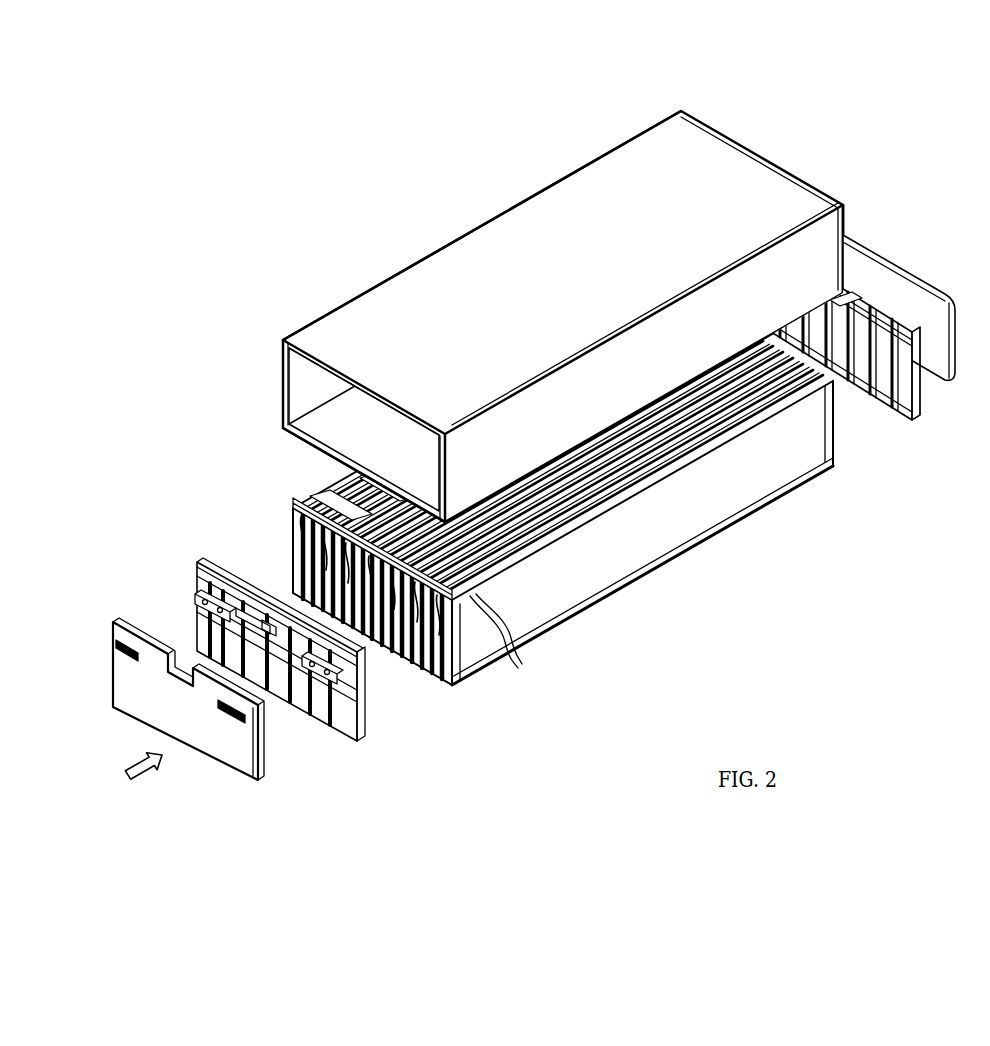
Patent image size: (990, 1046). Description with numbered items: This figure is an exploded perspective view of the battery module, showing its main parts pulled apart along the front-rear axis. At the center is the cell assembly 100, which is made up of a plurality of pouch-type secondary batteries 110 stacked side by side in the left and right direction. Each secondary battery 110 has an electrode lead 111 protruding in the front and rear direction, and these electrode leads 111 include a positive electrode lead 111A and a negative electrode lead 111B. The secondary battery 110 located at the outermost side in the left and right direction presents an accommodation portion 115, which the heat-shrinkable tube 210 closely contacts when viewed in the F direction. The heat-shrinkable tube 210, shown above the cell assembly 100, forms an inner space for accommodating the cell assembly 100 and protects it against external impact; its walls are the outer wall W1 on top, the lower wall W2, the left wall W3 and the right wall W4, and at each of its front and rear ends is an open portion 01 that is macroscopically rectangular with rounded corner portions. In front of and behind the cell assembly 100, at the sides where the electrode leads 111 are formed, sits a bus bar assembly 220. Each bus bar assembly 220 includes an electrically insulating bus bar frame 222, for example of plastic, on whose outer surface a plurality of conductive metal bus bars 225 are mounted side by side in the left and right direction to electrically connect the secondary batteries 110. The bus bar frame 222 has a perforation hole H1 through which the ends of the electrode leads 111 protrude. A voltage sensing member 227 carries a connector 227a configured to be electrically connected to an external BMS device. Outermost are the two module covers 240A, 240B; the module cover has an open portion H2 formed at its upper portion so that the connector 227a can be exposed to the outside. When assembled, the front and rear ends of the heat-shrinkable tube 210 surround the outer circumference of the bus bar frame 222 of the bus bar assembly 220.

The cell assembly 100 is at (550, 497).
The secondary battery 110 is at (503, 653).
The electrode lead 111 is at (837, 603).
The positive electrode lead 111A is at (416, 662).
The negative electrode lead 111B is at (835, 430).
The accommodation portion 115 is at (615, 574).
The heat-shrinkable tube 210 is at (568, 316).
The bus bar assembly 220 is at (919, 397).
The bus bar frame 222 is at (360, 742).
The bus bar 225 is at (216, 622).
The voltage sensing member 227 is at (370, 506).
The connector 227a is at (303, 536).
The module cover 240A is at (152, 699).
The module cover 240B is at (914, 274).
The open portion 01 is at (760, 155).
The outer wall W1 is at (513, 243).
The lower wall W2 is at (306, 443).
The left wall W3 is at (427, 256).
The right wall W4 is at (813, 243).
The perforation hole H1 is at (312, 712).
The open portion H2 is at (174, 669).
The F direction F is at (139, 762).